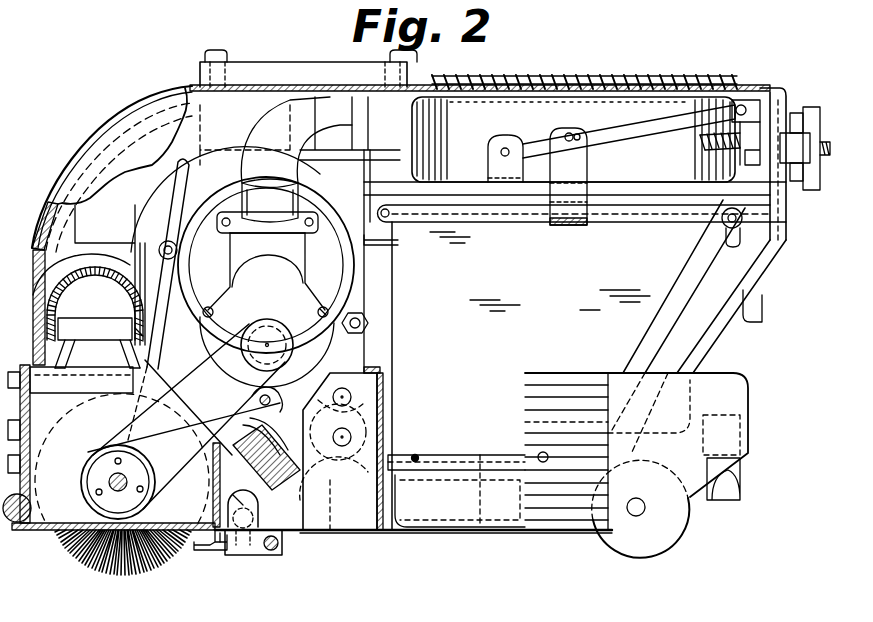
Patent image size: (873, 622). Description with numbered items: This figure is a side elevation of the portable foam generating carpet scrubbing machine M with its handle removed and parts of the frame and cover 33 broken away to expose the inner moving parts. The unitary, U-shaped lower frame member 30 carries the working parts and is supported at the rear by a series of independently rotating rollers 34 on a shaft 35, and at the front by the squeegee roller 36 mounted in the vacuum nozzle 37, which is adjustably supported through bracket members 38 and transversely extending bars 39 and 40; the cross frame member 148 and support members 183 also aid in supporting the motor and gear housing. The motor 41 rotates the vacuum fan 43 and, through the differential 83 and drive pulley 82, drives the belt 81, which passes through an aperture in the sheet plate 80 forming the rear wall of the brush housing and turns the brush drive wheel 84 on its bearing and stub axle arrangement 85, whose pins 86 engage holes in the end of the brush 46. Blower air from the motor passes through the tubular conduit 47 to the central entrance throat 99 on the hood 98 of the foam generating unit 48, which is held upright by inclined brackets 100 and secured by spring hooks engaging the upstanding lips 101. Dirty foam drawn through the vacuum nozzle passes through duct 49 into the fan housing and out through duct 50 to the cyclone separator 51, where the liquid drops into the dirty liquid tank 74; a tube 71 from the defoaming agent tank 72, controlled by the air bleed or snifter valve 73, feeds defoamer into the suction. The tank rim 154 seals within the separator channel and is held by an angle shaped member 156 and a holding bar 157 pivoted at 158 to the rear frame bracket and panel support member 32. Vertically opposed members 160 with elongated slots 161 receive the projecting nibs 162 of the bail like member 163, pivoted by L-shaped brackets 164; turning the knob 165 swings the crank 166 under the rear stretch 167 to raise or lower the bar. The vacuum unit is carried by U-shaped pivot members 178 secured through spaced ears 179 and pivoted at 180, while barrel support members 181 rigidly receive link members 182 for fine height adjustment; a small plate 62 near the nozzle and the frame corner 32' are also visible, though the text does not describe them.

The portable foam generating carpet scrubbing machine M is at (103, 106).
The lower frame member 30 is at (24, 532).
The rear frame bracket and panel support member 32 is at (749, 288).
The frame upper corner 32' is at (763, 136).
The removable cover 33 is at (100, 144).
The rollers 34 is at (652, 556).
The shaft 35 is at (645, 510).
The squeegee roller 36 is at (246, 562).
The vacuum nozzle 37 is at (221, 556).
The bracket members 38 is at (362, 441).
The transversely extending bar 39 is at (351, 396).
The transversely extending bar 40 is at (351, 438).
The motor 41 is at (217, 281).
The vacuum fan 43 is at (163, 190).
The brush 46 is at (125, 560).
The tubular conduit 47 is at (108, 229).
The foam generating unit 48 is at (56, 355).
The duct 49 is at (240, 417).
The duct 50 is at (292, 100).
The cyclone separator 51 is at (524, 123).
The latch plate 62 is at (196, 551).
The tube 71 is at (333, 534).
The defoaming agent tank 72 is at (437, 520).
The air bleed or snifter valve 73 is at (489, 452).
The dirty liquid tank 74 is at (578, 337).
The sheet plate 80 is at (155, 393).
The drive belt 81 is at (176, 419).
The drive pulley 82 is at (271, 330).
The differential 83 is at (251, 311).
The brush drive wheel 84 is at (96, 484).
The bearing and stub axle arrangement 85 is at (107, 476).
The pins 86 is at (118, 457).
The hood 98 is at (100, 288).
The central entrance throat 99 is at (137, 258).
The inclined brackets 100 is at (110, 377).
The upstanding lips 101 is at (140, 357).
The cross frame member 148 is at (368, 368).
The rim 154 is at (477, 212).
The angle shaped member 156 is at (396, 246).
The holding bar 157 is at (633, 224).
The holding bar pivot 158 is at (722, 206).
The vertically opposed members 160 is at (588, 163).
The elongated slot 161 is at (580, 128).
The projecting nib 162 is at (572, 133).
The bail like member 163 is at (666, 120).
The L-shaped brackets 164 is at (494, 170).
The knob 165 is at (812, 106).
The crank 166 is at (700, 136).
The rear stretch 167 is at (740, 104).
The U-shaped pivot members 178 is at (240, 548).
The spaced ears 179 is at (300, 481).
The pivot 180 is at (238, 500).
The barrel support members 181 is at (290, 463).
The link members 182 is at (278, 426).
The support members 183 is at (340, 371).